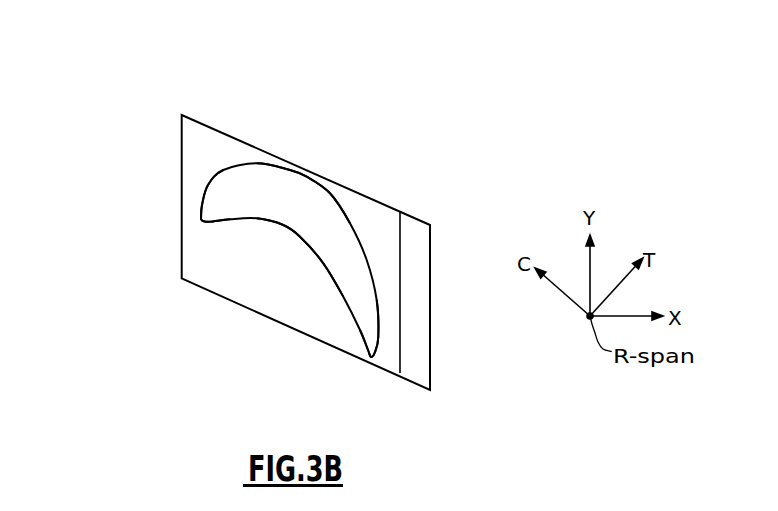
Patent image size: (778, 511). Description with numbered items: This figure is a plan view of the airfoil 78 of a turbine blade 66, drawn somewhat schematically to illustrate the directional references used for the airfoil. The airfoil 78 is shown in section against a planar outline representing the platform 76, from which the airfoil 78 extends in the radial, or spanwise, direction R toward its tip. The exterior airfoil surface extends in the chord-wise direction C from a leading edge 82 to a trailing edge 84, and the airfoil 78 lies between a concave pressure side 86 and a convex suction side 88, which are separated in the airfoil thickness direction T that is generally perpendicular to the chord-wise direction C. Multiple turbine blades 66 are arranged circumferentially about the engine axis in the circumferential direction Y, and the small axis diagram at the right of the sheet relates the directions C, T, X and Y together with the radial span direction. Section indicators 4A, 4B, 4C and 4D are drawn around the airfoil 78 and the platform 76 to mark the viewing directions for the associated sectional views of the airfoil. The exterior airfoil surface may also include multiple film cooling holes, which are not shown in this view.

The platform 76 is at (245, 122).
The turbine blade 66 is at (412, 147).
The suction side 88 is at (307, 177).
The pressure side 86 is at (298, 238).
The leading edge 82 is at (201, 221).
The airfoil 78 is at (192, 243).
The trailing edge 84 is at (371, 358).
The section view 4A indicator 4A is at (150, 286).
The section view 4B indicator 4B is at (249, 348).
The section view 4C indicator 4C is at (422, 188).
The section view 4D indicator 4D is at (365, 115).